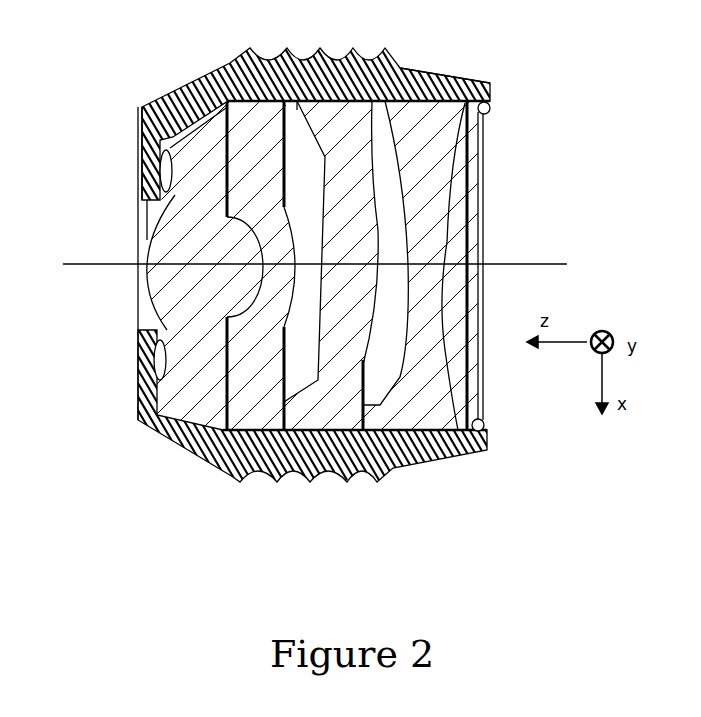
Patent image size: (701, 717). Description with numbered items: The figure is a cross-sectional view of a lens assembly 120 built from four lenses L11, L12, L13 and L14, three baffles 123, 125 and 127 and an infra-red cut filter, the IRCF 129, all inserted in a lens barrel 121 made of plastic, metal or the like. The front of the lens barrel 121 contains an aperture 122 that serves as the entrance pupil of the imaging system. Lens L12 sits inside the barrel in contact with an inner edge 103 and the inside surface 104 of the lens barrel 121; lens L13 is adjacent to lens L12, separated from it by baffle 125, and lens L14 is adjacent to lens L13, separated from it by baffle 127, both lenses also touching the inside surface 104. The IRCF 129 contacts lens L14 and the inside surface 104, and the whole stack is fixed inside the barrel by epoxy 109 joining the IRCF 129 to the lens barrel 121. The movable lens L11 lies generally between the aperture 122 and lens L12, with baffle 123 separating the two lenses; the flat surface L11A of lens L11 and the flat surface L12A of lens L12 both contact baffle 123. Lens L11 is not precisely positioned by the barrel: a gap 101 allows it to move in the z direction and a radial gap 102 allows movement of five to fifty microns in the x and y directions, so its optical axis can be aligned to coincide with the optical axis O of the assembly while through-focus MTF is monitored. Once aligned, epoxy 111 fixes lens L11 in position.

The lens assembly 120 is at (350, 243).
The gap 101 is at (140, 128).
The radial gap 102 is at (147, 107).
The inner edge 103 is at (232, 100).
The inside surface 104 is at (360, 110).
The epoxy 109 is at (490, 110).
The epoxy 111 is at (163, 190).
The lens barrel 121 is at (140, 153).
The aperture 122 is at (147, 320).
The baffle 123 is at (200, 97).
The baffle 125 is at (296, 106).
The baffle 127 is at (418, 78).
The IRCF 129 is at (477, 405).
The movable lens L11 is at (145, 286).
The flat surface L11A is at (227, 353).
The flat surface L12A is at (227, 393).
The lens L12 is at (242, 413).
The lens L13 is at (331, 263).
The lens L14 is at (418, 402).
The optical axis O is at (517, 265).